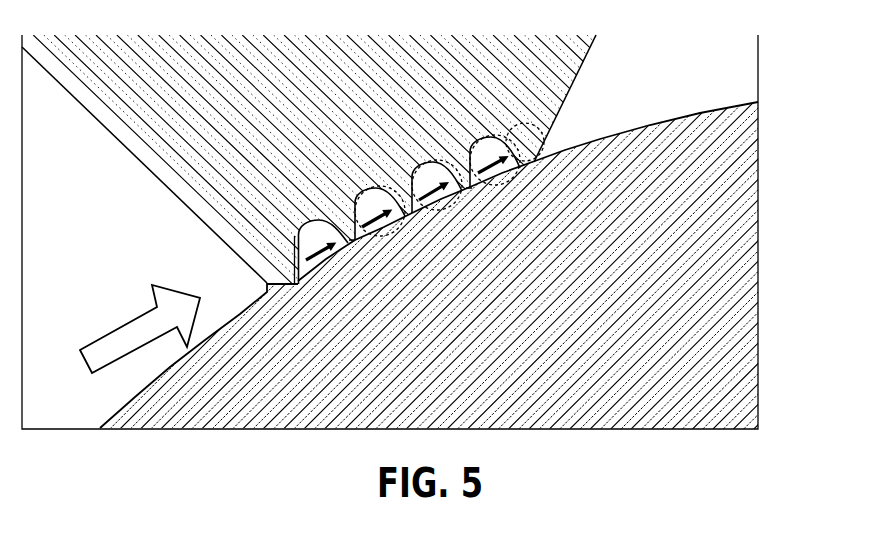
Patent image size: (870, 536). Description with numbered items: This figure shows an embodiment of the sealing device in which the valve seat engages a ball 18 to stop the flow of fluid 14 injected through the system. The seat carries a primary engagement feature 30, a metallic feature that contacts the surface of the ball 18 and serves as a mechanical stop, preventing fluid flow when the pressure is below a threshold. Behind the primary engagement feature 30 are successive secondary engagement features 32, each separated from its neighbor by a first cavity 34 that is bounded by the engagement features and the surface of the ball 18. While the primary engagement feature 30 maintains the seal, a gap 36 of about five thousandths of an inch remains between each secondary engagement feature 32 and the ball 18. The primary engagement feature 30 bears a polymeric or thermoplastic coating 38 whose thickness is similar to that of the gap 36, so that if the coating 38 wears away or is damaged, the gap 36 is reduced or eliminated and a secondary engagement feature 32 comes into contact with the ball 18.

The fluid 14 is at (120, 343).
The ball 18 is at (737, 162).
The primary engagement feature 30 is at (282, 270).
The secondary engagement feature 32 is at (353, 239).
The first cavity 34 is at (297, 222).
The gap 36 is at (402, 200).
The coating 38 is at (267, 282).